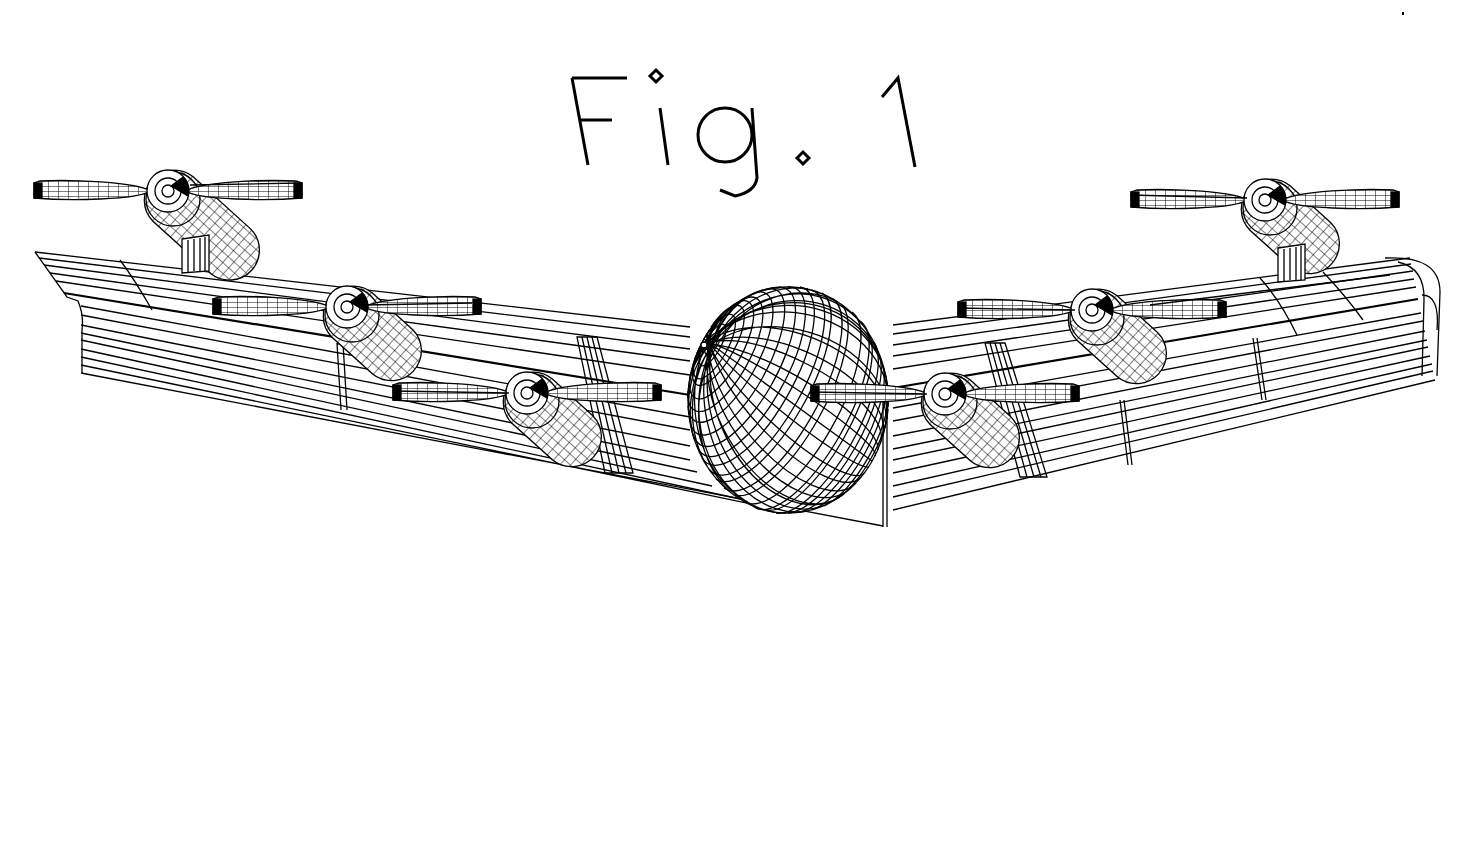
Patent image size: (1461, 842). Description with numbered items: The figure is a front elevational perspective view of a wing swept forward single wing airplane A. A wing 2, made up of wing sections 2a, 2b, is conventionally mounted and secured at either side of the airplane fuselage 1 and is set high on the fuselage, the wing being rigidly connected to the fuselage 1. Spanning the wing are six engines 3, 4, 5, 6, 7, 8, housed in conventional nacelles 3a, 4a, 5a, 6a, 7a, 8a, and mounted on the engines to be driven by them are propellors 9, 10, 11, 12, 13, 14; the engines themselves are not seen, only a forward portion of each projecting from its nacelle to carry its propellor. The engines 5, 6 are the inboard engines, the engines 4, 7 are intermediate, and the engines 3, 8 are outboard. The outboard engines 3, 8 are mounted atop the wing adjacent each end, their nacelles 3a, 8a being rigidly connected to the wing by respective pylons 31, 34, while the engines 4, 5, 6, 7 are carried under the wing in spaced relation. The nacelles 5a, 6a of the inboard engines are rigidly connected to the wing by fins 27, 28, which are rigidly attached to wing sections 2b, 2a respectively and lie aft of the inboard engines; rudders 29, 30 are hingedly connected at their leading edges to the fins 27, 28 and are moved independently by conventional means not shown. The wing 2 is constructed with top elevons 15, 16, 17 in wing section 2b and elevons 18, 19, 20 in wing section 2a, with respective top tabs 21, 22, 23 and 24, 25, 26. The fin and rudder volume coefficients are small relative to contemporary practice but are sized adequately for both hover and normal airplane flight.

The airplane fuselage 1 is at (782, 290).
The wing 2 is at (333, 276).
The wing section 2a is at (602, 318).
The wing section 2b is at (898, 328).
The engine 3 is at (1268, 180).
The nacelle 3a is at (1335, 235).
The engine 4 is at (1100, 295).
The nacelle 4a is at (1165, 380).
The engine 5 is at (917, 455).
The nacelle 5a is at (1027, 487).
The engine 6 is at (537, 413).
The nacelle 6a is at (567, 470).
The engine 7 is at (322, 327).
The nacelle 7a is at (377, 385).
The engine 8 is at (172, 170).
The nacelle 8a is at (262, 236).
The propellor 9 is at (1185, 195).
The propellor 10 is at (990, 303).
The propellor 11 is at (888, 405).
The propellor 12 is at (467, 400).
The propellor 13 is at (450, 307).
The propellor 14 is at (283, 188).
The top elevon 15 is at (1417, 382).
The top elevon 16 is at (1258, 425).
The top elevon 17 is at (1127, 407).
The elevon 18 is at (737, 505).
The elevon 19 is at (500, 362).
The elevon 20 is at (157, 355).
The top tab 21 is at (1377, 385).
The top tab 22 is at (1230, 422).
The top tab 23 is at (913, 503).
The top tab 24 is at (870, 517).
The top tab 25 is at (437, 432).
The top tab 26 is at (310, 398).
The fin 27 is at (1097, 382).
The fin 28 is at (652, 312).
The rudder 29 is at (1095, 462).
The rudder 30 is at (670, 410).
The pylon 31 is at (1278, 265).
The pylon 34 is at (182, 262).
The airplane A is at (1207, 281).